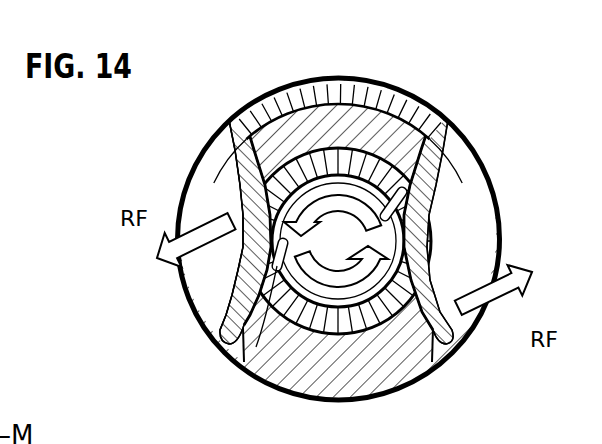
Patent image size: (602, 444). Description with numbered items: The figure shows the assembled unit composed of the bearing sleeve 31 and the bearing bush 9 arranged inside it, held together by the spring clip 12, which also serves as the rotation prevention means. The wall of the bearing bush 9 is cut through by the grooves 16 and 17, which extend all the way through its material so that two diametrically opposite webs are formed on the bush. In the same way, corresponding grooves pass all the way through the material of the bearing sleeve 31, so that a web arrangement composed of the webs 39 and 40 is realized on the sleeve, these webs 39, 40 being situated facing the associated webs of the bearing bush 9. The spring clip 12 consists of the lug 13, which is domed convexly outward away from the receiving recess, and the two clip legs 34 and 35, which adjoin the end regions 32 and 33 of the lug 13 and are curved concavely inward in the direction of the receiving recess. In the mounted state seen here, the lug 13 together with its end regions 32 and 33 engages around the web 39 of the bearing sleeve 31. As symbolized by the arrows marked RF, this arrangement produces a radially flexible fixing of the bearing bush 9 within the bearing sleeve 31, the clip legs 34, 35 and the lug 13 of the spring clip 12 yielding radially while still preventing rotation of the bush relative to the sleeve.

The bearing bush 9 is at (286, 164).
The spring clip 12 is at (446, 174).
The lug 13 is at (294, 96).
The groove 16 is at (256, 347).
The groove 17 is at (380, 195).
The bearing sleeve 31 is at (506, 213).
The end region of the lug 32 is at (233, 135).
The end region of the lug 33 is at (441, 127).
The clip leg 34 is at (243, 245).
The clip leg 35 is at (420, 252).
The web 39 is at (363, 127).
The web 40 is at (309, 378).